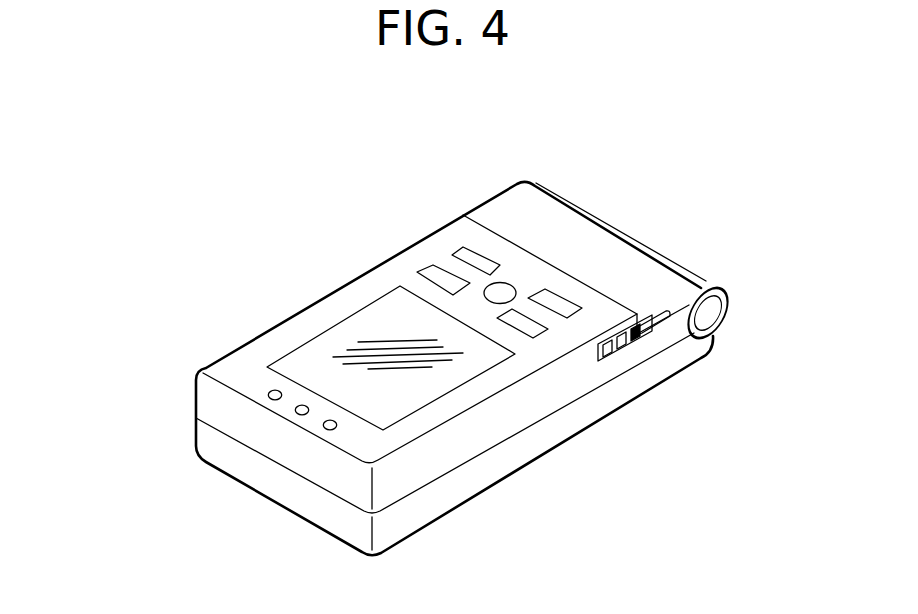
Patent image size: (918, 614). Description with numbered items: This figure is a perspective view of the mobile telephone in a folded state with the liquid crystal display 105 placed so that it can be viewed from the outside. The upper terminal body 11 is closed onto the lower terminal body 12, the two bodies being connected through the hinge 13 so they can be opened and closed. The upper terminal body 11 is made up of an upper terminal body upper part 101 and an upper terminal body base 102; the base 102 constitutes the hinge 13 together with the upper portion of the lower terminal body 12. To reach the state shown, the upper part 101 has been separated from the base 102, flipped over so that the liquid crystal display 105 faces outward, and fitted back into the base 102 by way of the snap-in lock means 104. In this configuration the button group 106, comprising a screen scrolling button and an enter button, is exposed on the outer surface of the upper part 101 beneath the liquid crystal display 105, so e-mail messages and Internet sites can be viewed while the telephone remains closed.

The upper terminal body 11 is at (233, 358).
The lower terminal body 12 is at (456, 486).
The hinge 13 is at (710, 306).
The upper terminal body upper part 101 is at (356, 278).
The upper terminal body base 102 is at (510, 205).
The lock means 104 is at (650, 325).
The liquid crystal display 105 is at (347, 343).
The button group 106 is at (458, 250).